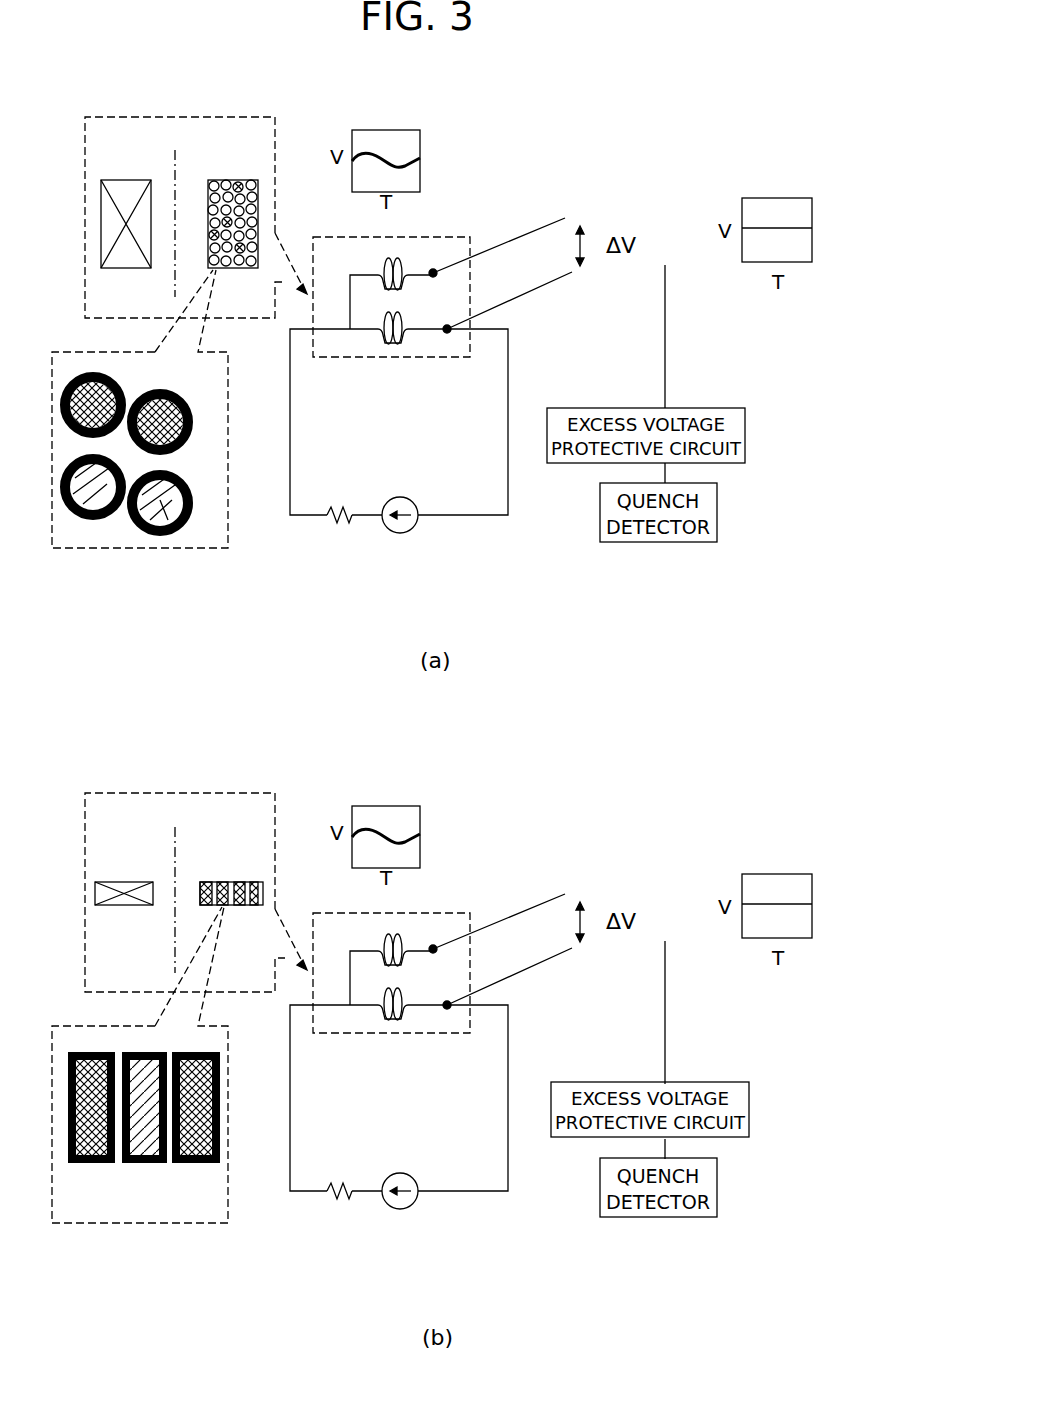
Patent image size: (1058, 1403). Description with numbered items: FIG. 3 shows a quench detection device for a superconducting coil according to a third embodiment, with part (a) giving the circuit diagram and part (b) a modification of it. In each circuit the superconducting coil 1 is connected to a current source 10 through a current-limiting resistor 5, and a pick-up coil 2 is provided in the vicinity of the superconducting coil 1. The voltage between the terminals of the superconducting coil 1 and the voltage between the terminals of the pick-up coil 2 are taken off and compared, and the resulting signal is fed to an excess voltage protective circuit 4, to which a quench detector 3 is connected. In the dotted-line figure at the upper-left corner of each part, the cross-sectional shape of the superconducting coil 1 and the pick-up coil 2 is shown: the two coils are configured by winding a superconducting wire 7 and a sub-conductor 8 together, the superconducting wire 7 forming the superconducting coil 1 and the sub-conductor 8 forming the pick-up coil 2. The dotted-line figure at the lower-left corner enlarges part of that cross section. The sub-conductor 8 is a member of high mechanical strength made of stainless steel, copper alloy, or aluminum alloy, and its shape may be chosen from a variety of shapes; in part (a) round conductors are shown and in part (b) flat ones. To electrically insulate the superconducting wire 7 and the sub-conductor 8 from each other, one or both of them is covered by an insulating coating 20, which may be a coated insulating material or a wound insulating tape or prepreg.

The superconducting coil 1 is at (388, 346).
The pick-up coil 2 is at (385, 275).
The quench detector 3 is at (717, 515).
The excess voltage protective circuit 4 is at (745, 440).
The current-limiting resistor 5 is at (336, 522).
The superconducting wire 7 is at (82, 375).
The sub-conductor 8 is at (173, 540).
The current source 10 is at (404, 533).
The insulating coating 20 is at (195, 425).